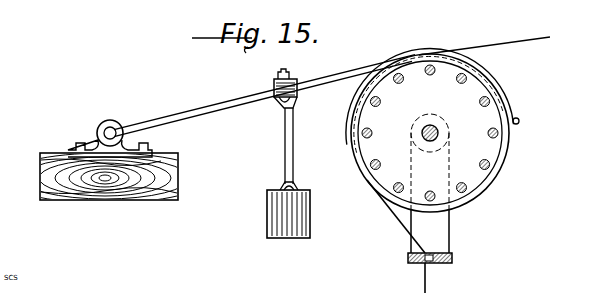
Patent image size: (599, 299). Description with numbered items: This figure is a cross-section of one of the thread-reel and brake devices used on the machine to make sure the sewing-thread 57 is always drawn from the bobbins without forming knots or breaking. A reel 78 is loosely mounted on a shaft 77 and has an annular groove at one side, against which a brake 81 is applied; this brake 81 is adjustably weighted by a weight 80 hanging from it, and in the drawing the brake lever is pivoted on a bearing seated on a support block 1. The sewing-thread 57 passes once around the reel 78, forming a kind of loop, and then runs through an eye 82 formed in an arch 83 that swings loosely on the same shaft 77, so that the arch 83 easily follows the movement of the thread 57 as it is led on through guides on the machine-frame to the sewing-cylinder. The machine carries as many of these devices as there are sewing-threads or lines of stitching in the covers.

The support block 1 is at (124, 200).
The sewing-thread 57 is at (538, 40).
The shaft 77 is at (436, 128).
The reel 78 is at (503, 164).
The weight 80 is at (312, 208).
The brake 81 is at (233, 106).
The eye 82 is at (432, 262).
The arch 83 is at (440, 228).